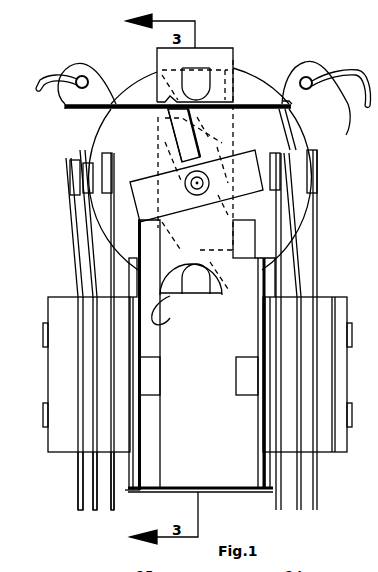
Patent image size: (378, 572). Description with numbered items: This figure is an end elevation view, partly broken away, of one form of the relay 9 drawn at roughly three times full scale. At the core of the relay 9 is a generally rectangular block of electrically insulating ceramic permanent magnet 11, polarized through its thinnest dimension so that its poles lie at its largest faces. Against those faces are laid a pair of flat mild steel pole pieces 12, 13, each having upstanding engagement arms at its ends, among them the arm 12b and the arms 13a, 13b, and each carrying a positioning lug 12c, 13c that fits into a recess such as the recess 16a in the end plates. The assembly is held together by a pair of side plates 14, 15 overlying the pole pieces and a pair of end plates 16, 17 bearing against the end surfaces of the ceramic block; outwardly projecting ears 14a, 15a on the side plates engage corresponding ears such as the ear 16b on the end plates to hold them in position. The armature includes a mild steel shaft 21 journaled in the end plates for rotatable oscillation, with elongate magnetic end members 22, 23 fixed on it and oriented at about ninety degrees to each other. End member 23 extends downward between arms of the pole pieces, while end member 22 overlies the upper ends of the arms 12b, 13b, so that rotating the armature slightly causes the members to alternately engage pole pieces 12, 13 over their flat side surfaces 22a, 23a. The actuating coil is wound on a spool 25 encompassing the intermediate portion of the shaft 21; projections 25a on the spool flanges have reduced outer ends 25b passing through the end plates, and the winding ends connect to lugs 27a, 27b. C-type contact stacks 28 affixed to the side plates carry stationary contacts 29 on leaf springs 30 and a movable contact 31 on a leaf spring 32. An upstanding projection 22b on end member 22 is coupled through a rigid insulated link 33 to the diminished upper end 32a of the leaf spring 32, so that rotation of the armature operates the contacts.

The relay 9 is at (58, 202).
The ceramic permanent magnet 11 is at (167, 310).
The pole piece 12 is at (246, 220).
The pole piece arm 12b is at (237, 250).
The positioning lug 12c is at (243, 394).
The pole piece 13 is at (132, 336).
The pole piece arm 13a is at (140, 270).
The pole piece arm 13b is at (147, 248).
The positioning lug 13c is at (152, 394).
The side plate 14 is at (257, 442).
The outwardly projecting ear 14a is at (256, 294).
The side plate 15 is at (140, 442).
The outwardly projecting ear 15a is at (137, 492).
The end plate 16 is at (220, 483).
The recess 16a is at (156, 367).
The outwardly projecting ear 16b is at (265, 326).
The end plate 17 is at (235, 61).
The shaft 21 is at (200, 190).
The armature end member 22 is at (240, 149).
The side surface 22a is at (202, 265).
The upstanding projection 22b is at (173, 142).
The armature end member 23 is at (165, 147).
The side surface 23a is at (201, 155).
The spool 25 is at (147, 86).
The projection 25a is at (213, 66).
The reduced outer end 25b is at (166, 312).
The lug 27a is at (322, 62).
The lug 27b is at (88, 63).
The contact stack 28 is at (72, 294).
The stationary contact 29 is at (284, 190).
The leaf spring 30 is at (318, 247).
The movable contact 31 is at (315, 135).
The leaf spring 32 is at (80, 133).
The diminished upper end 32a is at (65, 102).
The rigid insulated link 33 is at (245, 104).